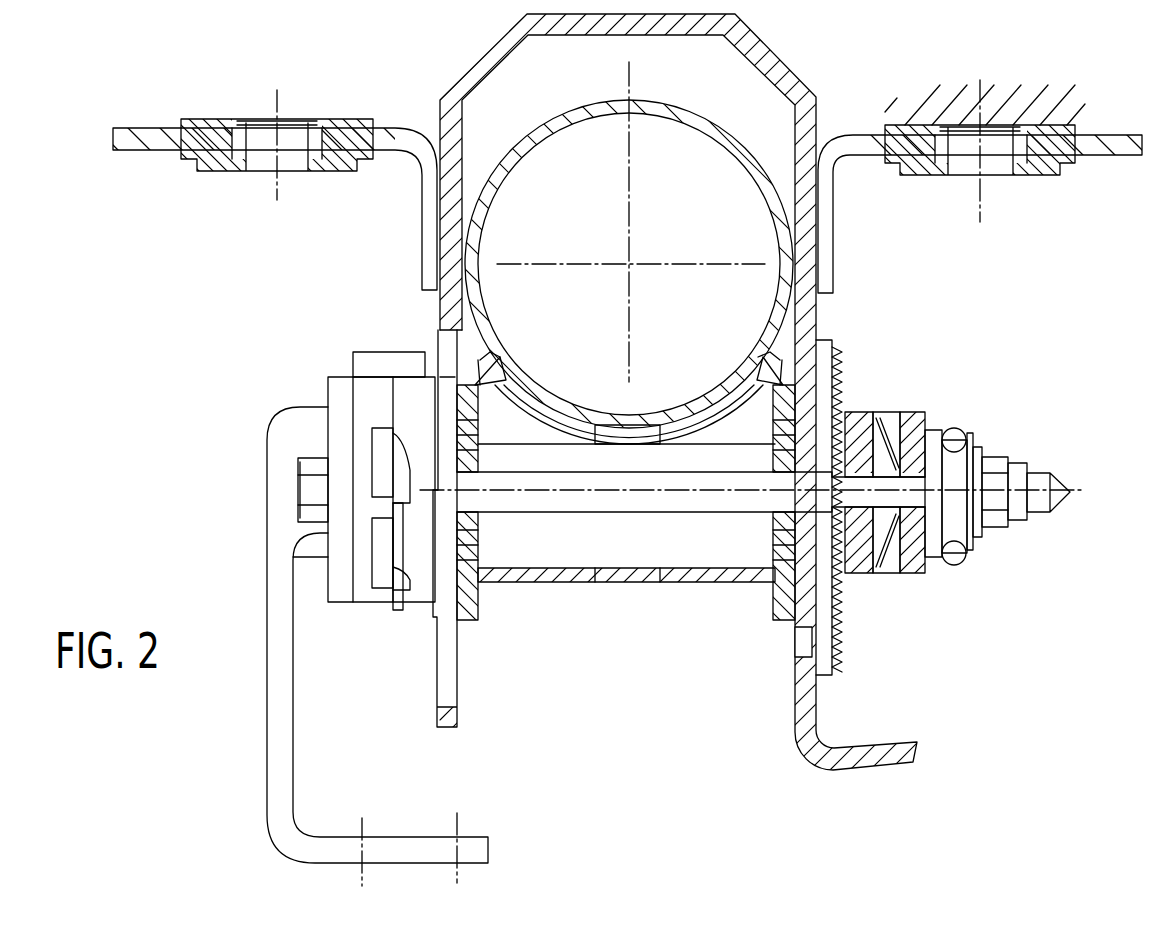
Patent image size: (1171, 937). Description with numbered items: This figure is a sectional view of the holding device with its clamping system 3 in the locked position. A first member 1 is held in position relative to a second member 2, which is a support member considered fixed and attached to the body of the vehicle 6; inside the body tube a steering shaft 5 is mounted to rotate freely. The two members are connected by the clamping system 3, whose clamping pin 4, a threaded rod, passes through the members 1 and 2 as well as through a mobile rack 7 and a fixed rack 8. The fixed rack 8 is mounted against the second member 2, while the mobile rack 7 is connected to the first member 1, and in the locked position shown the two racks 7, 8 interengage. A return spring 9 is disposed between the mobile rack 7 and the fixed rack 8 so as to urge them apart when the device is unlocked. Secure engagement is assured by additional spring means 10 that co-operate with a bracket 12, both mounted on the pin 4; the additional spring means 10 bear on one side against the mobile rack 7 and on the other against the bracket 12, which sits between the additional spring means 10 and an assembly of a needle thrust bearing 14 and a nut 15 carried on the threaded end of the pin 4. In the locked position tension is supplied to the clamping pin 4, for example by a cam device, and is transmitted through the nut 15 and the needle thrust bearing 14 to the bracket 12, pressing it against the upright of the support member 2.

The first member 1 is at (484, 214).
The second member 2 is at (808, 257).
The clamping system 3 is at (1006, 446).
The clamping pin 4 is at (608, 500).
The steering shaft 5 is at (633, 262).
The vehicle 6 is at (1058, 95).
The mobile rack 7 is at (858, 440).
The fixed rack 8 is at (842, 632).
The return spring 9 is at (770, 598).
The additional spring means 10 is at (885, 555).
The bracket 12 is at (915, 428).
The needle thrust bearing 14 is at (955, 525).
The nut 15 is at (1020, 510).